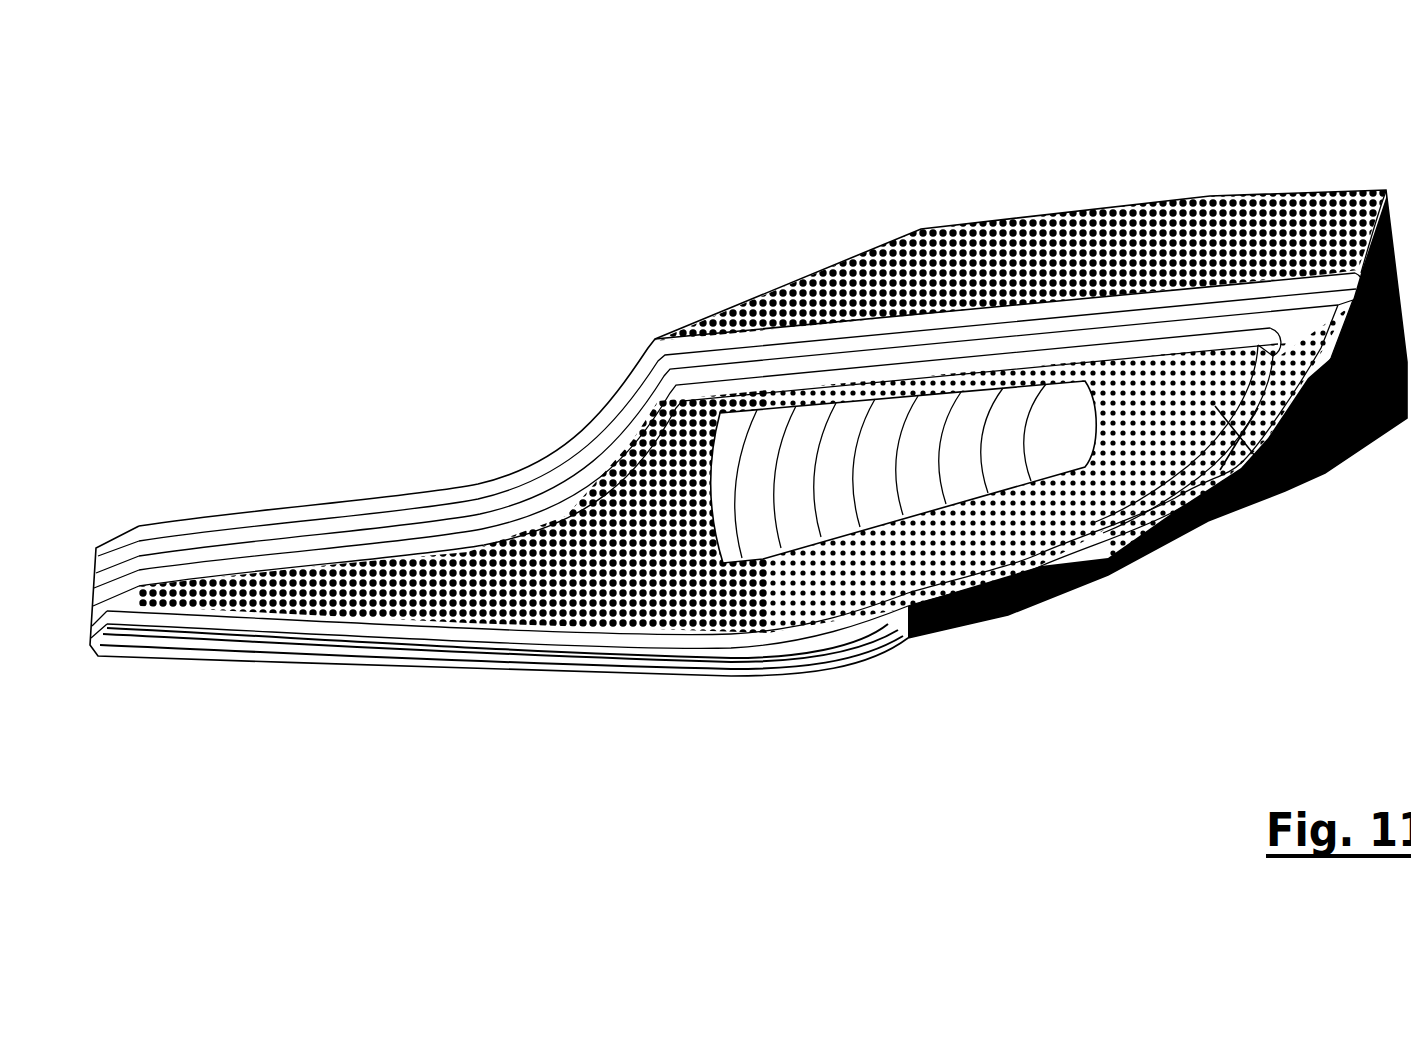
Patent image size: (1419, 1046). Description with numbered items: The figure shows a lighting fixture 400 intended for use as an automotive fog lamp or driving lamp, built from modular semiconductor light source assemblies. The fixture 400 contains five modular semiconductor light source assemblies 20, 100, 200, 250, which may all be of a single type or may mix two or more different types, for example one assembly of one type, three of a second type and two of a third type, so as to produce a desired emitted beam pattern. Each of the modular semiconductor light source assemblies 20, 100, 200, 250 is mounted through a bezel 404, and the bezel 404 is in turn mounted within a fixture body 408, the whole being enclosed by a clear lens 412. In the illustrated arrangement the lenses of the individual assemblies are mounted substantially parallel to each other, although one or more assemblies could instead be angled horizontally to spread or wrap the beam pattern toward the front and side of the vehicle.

The lighting fixture 400 is at (262, 690).
The bezel 404 is at (668, 555).
The fixture body 408 is at (1055, 250).
The clear lens 412 is at (1273, 487).
The modular semiconductor light source assembly 20 is at (735, 547).
The modular semiconductor light source assembly 100 is at (810, 530).
The modular semiconductor light source assembly 200 is at (962, 488).
The modular semiconductor light source assembly 250 is at (1052, 465).